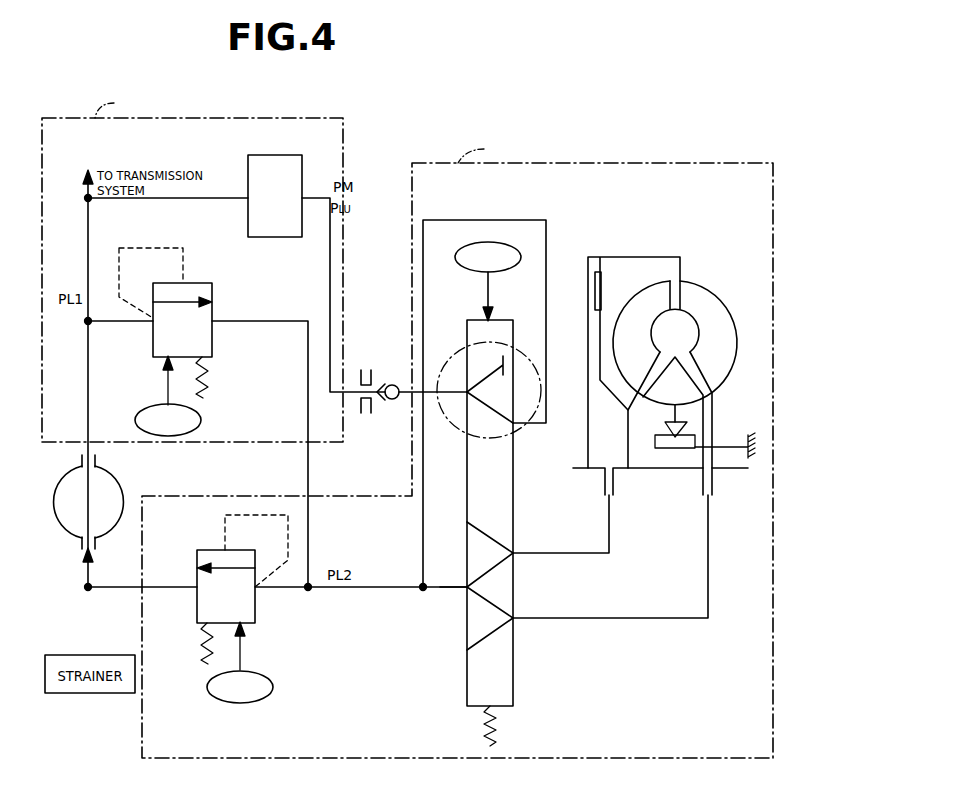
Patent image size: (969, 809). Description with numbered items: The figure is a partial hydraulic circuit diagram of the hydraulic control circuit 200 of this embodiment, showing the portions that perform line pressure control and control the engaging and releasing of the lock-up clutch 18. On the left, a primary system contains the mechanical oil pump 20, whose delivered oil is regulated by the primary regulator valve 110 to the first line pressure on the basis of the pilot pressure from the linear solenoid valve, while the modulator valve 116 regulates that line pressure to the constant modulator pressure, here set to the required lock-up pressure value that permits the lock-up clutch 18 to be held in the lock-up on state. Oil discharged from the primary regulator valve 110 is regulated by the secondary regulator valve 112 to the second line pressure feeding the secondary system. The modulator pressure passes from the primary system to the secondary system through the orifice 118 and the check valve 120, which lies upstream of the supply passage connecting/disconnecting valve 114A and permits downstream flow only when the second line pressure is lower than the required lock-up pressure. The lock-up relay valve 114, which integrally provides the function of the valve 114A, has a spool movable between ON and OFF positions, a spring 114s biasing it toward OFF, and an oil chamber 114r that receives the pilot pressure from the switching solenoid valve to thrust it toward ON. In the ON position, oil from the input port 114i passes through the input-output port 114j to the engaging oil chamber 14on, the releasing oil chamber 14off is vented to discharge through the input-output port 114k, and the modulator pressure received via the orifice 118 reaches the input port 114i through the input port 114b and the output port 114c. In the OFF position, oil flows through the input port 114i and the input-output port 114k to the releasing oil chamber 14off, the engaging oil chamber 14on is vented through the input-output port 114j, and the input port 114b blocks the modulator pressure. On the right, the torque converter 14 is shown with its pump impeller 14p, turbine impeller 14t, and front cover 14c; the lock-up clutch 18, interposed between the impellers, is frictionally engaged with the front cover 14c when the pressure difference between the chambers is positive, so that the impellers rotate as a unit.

The hydraulic control circuit 200 is at (476, 62).
The modulator valve 116 is at (248, 180).
The primary regulator valve 110 is at (203, 292).
The secondary regulator valve 112 is at (208, 558).
The mechanical oil pump 20 is at (108, 480).
The orifice 118 is at (361, 377).
The check valve 120 is at (393, 400).
The lock-up relay valve 114 is at (565, 488).
The oil chamber 114r is at (491, 321).
The input port 114b is at (451, 424).
The output port 114c is at (512, 424).
The supply passage connecting/disconnecting valve 114A is at (483, 442).
The input-output port 114k is at (514, 556).
The input-output port 114j is at (514, 621).
The input port 114i is at (466, 589).
The spring 114s is at (497, 740).
The torque converter 14 is at (654, 364).
The front cover 14c is at (588, 318).
The pump impeller 14p is at (720, 322).
The turbine impeller 14t is at (637, 320).
The engaging oil chamber 14on is at (655, 268).
The releasing oil chamber 14off is at (593, 433).
The lock-up clutch 18 is at (600, 284).